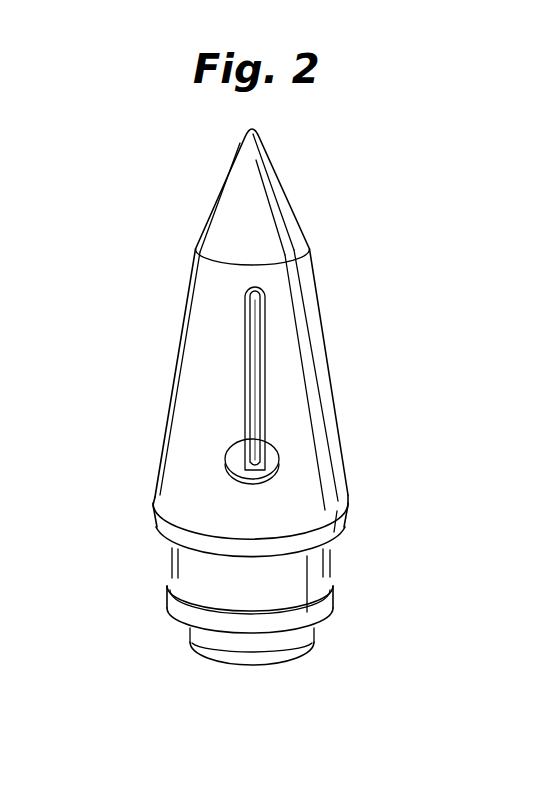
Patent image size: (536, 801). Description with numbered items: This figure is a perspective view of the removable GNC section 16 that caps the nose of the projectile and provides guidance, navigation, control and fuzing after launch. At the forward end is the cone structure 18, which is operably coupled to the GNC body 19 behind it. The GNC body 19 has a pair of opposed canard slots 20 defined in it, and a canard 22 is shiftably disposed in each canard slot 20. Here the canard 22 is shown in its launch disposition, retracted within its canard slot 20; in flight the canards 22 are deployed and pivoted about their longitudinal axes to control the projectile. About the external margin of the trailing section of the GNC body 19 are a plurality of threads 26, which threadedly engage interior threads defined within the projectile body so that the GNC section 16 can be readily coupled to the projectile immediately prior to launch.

The GNC section 16 is at (131, 188).
The cone structure 18 is at (243, 168).
The GNC body 19 is at (173, 453).
The canard slot 20 is at (245, 342).
The canard 22 is at (253, 398).
The threads 26 is at (293, 632).